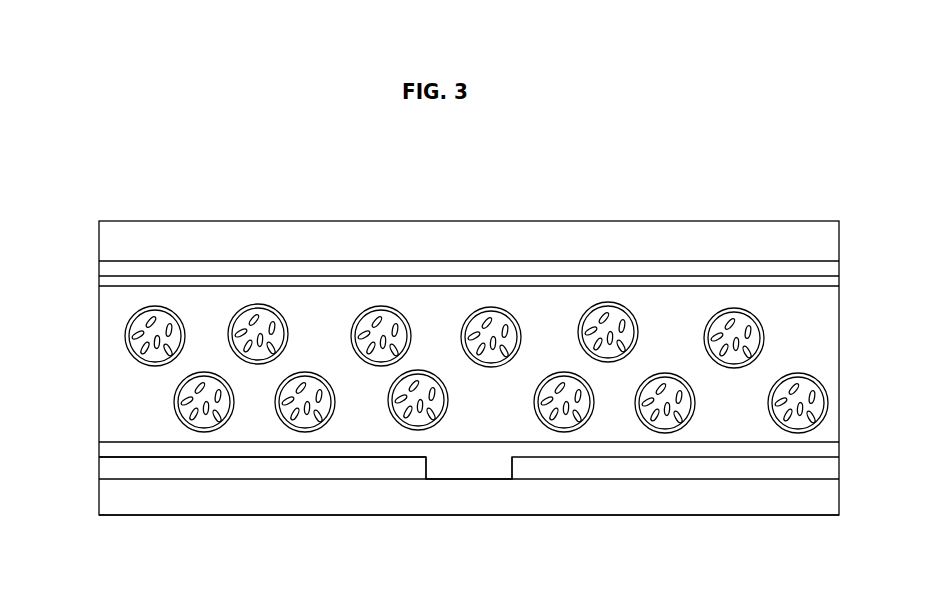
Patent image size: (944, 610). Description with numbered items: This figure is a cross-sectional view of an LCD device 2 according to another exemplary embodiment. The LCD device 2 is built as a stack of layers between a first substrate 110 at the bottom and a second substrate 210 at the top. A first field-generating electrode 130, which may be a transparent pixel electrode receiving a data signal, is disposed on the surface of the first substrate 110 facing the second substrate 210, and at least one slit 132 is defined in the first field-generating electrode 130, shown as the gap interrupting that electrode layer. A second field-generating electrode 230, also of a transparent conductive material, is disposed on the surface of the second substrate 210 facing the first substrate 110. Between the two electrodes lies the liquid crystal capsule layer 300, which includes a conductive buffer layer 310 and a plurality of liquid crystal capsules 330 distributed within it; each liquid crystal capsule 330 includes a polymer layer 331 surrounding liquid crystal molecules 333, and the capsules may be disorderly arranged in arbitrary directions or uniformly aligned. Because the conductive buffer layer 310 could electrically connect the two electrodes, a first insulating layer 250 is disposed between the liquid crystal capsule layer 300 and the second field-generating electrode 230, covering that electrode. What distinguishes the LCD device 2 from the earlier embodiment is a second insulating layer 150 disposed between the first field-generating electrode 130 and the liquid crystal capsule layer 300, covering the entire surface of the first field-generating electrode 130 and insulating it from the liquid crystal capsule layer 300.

The LCD device 2 is at (136, 178).
The first substrate 110 is at (104, 500).
The first field-generating electrode 130 is at (104, 466).
The slit 132 is at (480, 470).
The second insulating layer 150 is at (104, 447).
The second substrate 210 is at (104, 240).
The second field-generating electrode 230 is at (104, 268).
The first insulating layer 250 is at (104, 279).
The liquid crystal capsule layer 300 is at (845, 287).
The conductive buffer layer 310 is at (104, 391).
The liquid crystal capsule 330 is at (58, 327).
The polymer layer 331 is at (125, 327).
The liquid crystal molecules 333 is at (133, 339).